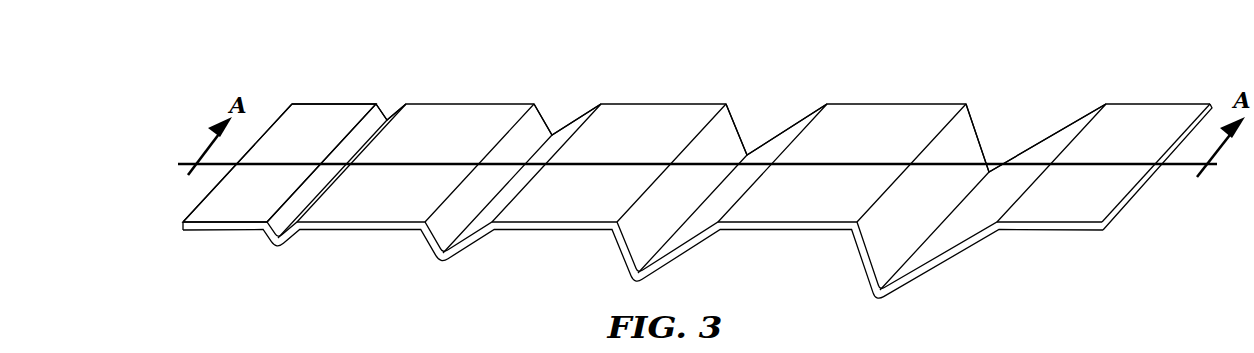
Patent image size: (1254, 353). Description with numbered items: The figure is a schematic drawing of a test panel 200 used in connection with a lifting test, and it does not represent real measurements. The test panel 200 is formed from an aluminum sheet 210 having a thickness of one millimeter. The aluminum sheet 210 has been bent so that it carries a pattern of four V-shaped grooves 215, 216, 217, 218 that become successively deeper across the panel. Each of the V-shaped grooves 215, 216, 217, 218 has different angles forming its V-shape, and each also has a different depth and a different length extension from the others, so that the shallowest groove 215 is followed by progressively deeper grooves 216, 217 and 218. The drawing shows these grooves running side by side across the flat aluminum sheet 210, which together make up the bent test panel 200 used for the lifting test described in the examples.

The test panel 200 is at (245, 66).
The aluminum sheet 210 is at (330, 110).
The V-shaped groove 215 is at (394, 94).
The V-shaped groove 216 is at (566, 93).
The V-shaped groove 217 is at (769, 94).
The V-shaped groove 218 is at (1030, 94).